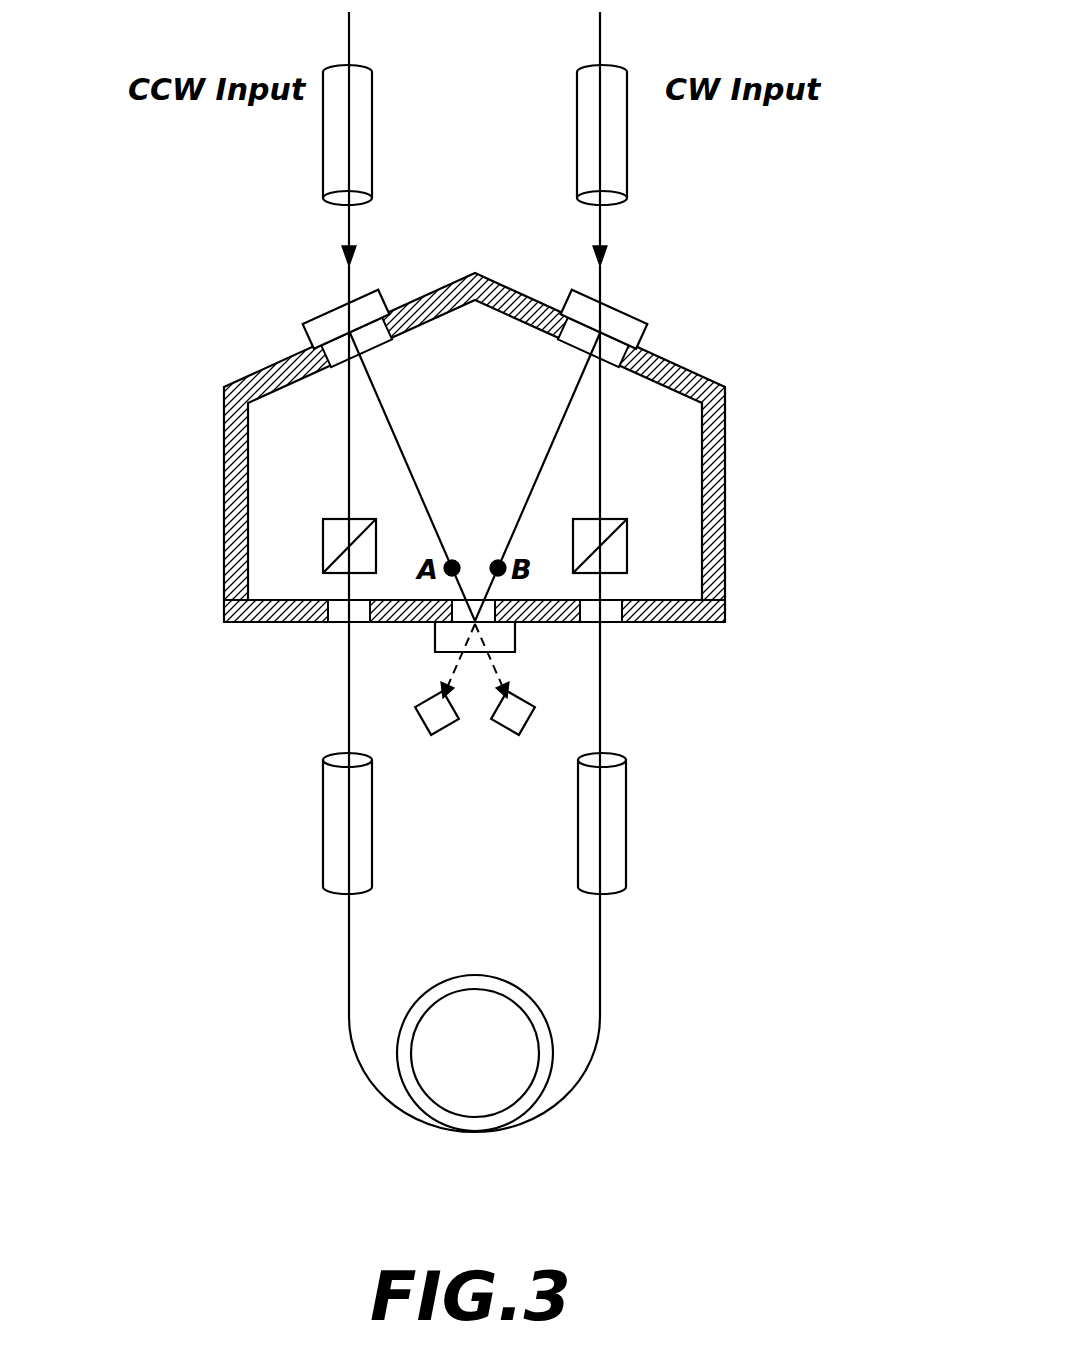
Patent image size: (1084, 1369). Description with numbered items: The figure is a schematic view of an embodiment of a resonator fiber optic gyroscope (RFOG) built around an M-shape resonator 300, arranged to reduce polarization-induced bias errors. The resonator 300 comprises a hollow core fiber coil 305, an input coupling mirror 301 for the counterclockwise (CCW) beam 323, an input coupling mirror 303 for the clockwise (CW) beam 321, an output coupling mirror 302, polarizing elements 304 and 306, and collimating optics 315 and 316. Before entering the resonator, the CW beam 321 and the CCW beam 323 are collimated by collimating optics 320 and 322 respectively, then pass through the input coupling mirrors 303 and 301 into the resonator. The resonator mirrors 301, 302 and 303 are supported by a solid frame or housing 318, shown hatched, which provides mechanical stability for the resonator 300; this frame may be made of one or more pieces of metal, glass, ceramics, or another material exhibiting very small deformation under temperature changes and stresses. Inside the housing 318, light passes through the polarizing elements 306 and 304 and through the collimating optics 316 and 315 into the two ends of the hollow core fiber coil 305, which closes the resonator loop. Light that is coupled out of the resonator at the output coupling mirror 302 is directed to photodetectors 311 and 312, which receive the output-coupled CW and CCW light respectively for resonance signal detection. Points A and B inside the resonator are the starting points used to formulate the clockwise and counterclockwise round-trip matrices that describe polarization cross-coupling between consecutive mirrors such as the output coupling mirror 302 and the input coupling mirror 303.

The M-shape resonator 300 is at (830, 364).
The input coupling mirror 301 is at (311, 320).
The output coupling mirror 302 is at (506, 646).
The input coupling mirror 303 is at (640, 320).
The polarizing element 304 is at (617, 519).
The hollow core fiber coil 305 is at (451, 984).
The polarizing element 306 is at (334, 519).
The photodetector 311 is at (513, 735).
The photodetector 312 is at (437, 735).
The collimating optics 315 is at (626, 820).
The collimating optics 316 is at (323, 820).
The solid frame (housing) 318 is at (224, 510).
The collimating optics 320 is at (627, 150).
The CW beam 321 is at (610, 232).
The collimating optics 322 is at (323, 150).
The CCW beam 323 is at (338, 232).